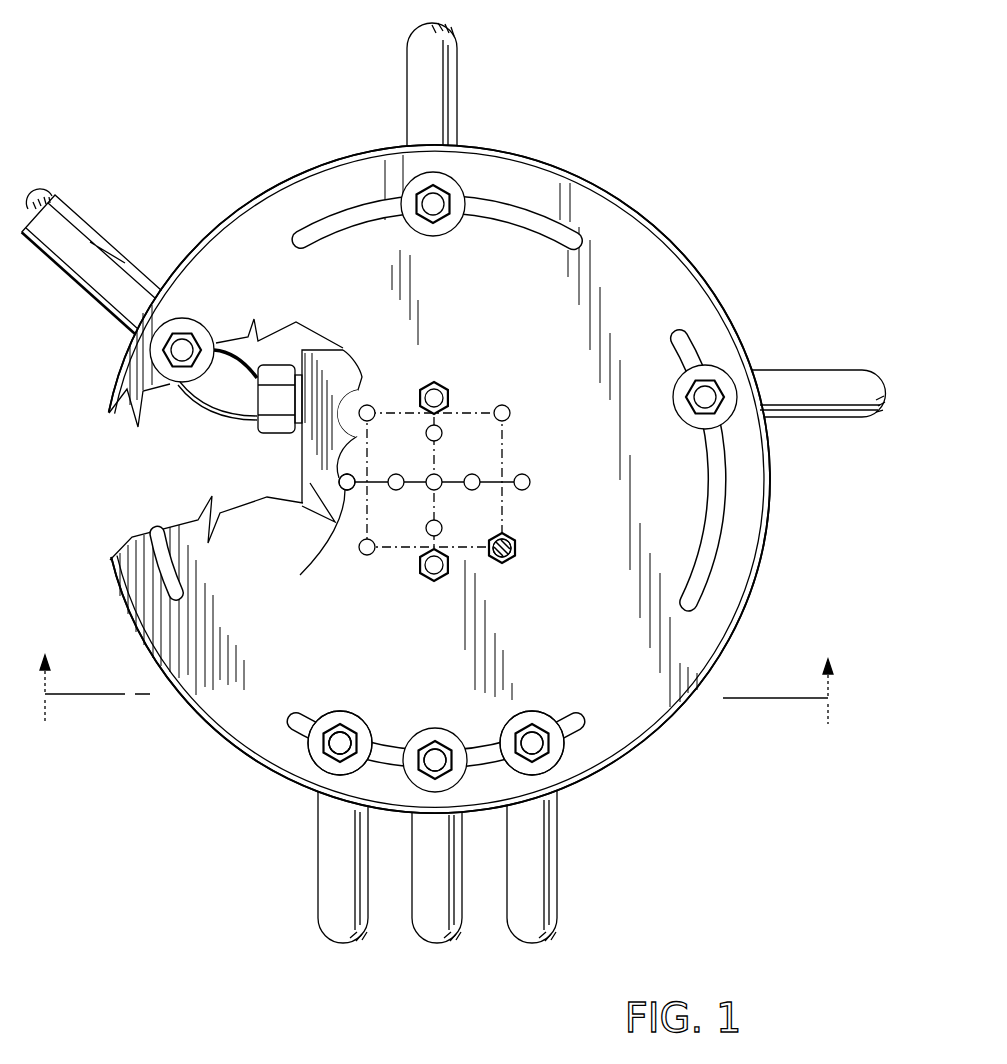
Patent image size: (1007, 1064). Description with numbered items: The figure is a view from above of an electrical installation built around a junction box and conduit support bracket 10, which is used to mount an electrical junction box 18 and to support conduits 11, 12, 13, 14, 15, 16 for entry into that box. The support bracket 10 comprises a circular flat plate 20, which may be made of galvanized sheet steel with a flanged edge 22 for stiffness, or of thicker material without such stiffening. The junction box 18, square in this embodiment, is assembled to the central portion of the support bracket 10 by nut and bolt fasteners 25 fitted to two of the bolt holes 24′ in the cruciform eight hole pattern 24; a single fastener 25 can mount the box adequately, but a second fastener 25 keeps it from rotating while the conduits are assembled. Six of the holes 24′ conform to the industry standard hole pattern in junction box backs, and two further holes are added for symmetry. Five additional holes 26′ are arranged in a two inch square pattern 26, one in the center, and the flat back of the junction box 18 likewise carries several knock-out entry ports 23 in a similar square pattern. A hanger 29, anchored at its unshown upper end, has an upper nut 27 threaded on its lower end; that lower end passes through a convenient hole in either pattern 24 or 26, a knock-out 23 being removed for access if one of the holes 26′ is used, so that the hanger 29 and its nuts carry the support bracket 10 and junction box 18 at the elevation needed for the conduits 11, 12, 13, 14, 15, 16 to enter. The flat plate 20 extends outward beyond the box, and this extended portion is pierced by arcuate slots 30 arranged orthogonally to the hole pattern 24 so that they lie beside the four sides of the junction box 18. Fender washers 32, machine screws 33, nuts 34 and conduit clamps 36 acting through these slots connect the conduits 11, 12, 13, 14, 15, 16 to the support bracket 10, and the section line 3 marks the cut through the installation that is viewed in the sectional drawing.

The junction box and conduit support bracket 10 is at (652, 163).
The conduit 11 is at (318, 926).
The conduit 12 is at (412, 926).
The conduit 13 is at (507, 926).
The conduit 14 is at (832, 418).
The conduit 15 is at (457, 66).
The conduit 16 is at (70, 206).
The junction box 18 is at (302, 490).
The circular flat plate 20 is at (628, 242).
The flanged edge 22 is at (651, 740).
The knock-out entry port 23 is at (346, 352).
The cruciform eight hole pattern 24 is at (441, 302).
The bolt hole 24′ is at (441, 427).
The nut and bolt fastener 25 is at (447, 390).
The square pattern 26 is at (405, 402).
The hole 26′ is at (369, 407).
The upper nut 27 is at (503, 560).
The hanger 29 is at (516, 553).
The arcuate slot 30 is at (483, 192).
The fender washer 32 is at (330, 712).
The machine screw 33 is at (335, 764).
The nut 34 is at (449, 782).
The conduit clamp 36 is at (350, 730).
The section line 3- 3 is at (436, 678).